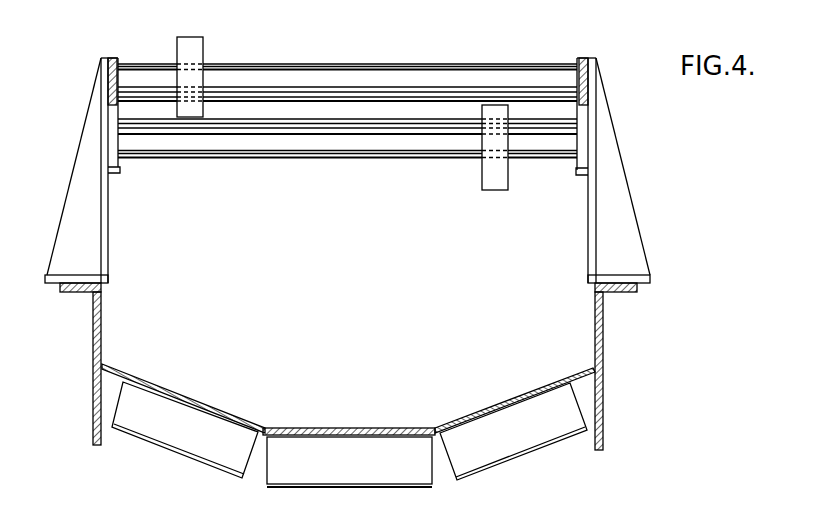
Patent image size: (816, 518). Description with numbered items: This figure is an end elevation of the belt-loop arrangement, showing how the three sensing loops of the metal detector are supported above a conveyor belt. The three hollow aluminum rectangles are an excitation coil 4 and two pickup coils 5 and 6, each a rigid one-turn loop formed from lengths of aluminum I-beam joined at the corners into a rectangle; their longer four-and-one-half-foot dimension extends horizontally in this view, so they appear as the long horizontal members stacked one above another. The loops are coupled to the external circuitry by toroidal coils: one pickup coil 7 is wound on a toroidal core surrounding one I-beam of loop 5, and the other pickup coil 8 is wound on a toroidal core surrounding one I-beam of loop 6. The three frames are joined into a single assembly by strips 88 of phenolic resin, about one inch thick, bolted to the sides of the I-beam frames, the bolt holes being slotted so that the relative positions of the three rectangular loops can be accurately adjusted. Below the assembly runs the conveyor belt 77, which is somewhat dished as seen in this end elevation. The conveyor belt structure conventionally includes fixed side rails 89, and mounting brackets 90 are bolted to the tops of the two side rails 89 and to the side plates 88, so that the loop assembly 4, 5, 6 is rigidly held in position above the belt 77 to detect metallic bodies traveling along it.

The excitation coil 4 is at (290, 105).
The pickup coil 5 is at (445, 68).
The pickup coil 6 is at (302, 150).
The pickup coil 7 is at (180, 42).
The pickup coil 8 is at (492, 190).
The conveyor belt 77 is at (352, 428).
The strips of phenolic resin 88 is at (120, 172).
The side rails 89 is at (93, 333).
The mounting brackets 90 is at (108, 256).